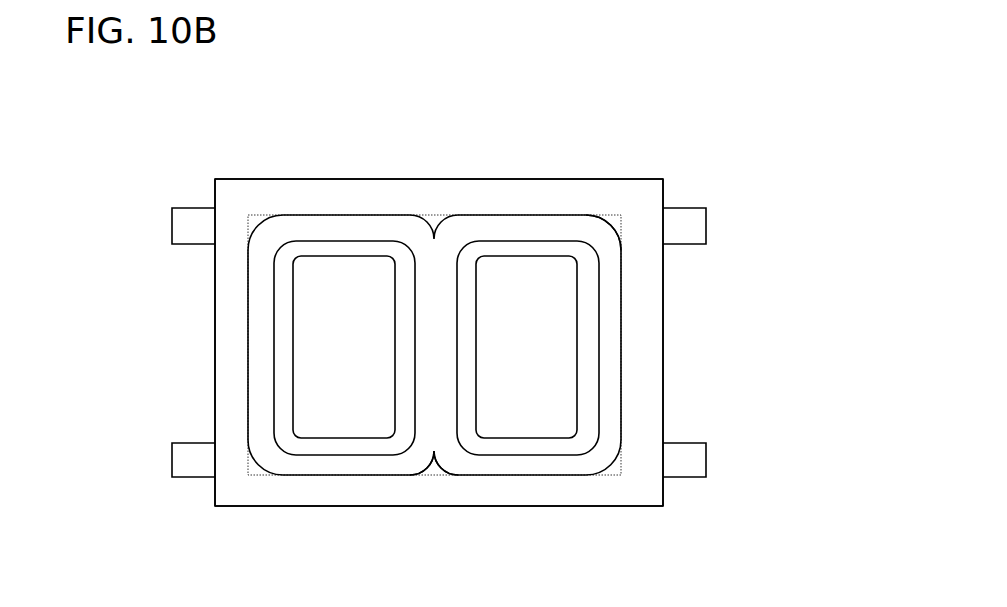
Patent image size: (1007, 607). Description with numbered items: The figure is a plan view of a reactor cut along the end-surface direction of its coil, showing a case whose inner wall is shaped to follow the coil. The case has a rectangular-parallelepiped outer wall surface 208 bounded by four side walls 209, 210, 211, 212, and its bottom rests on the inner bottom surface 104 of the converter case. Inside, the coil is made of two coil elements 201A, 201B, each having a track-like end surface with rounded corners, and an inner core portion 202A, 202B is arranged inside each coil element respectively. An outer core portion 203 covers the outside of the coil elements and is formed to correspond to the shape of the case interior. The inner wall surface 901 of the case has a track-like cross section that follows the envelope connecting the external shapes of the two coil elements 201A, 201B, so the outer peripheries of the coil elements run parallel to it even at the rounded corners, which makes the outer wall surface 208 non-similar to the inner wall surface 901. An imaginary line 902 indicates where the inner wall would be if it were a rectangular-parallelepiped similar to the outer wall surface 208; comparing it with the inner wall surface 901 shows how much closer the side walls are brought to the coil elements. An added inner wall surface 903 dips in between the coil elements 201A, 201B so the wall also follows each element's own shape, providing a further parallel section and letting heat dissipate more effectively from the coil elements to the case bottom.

The inner bottom surface 104 is at (786, 239).
The coil element 201A is at (291, 246).
The coil element 201B is at (501, 245).
The inner core portion 202A is at (342, 283).
The inner core portion 202B is at (547, 285).
The outer core portion 203 is at (489, 470).
The outer wall surface 208 is at (215, 322).
The side wall 209 is at (222, 398).
The side wall 210 is at (656, 365).
The side wall 211 is at (590, 180).
The side wall 212 is at (568, 506).
The inner wall surface 901 is at (615, 232).
The imaginary line 902 is at (621, 457).
The inner wall surface 903 is at (434, 452).